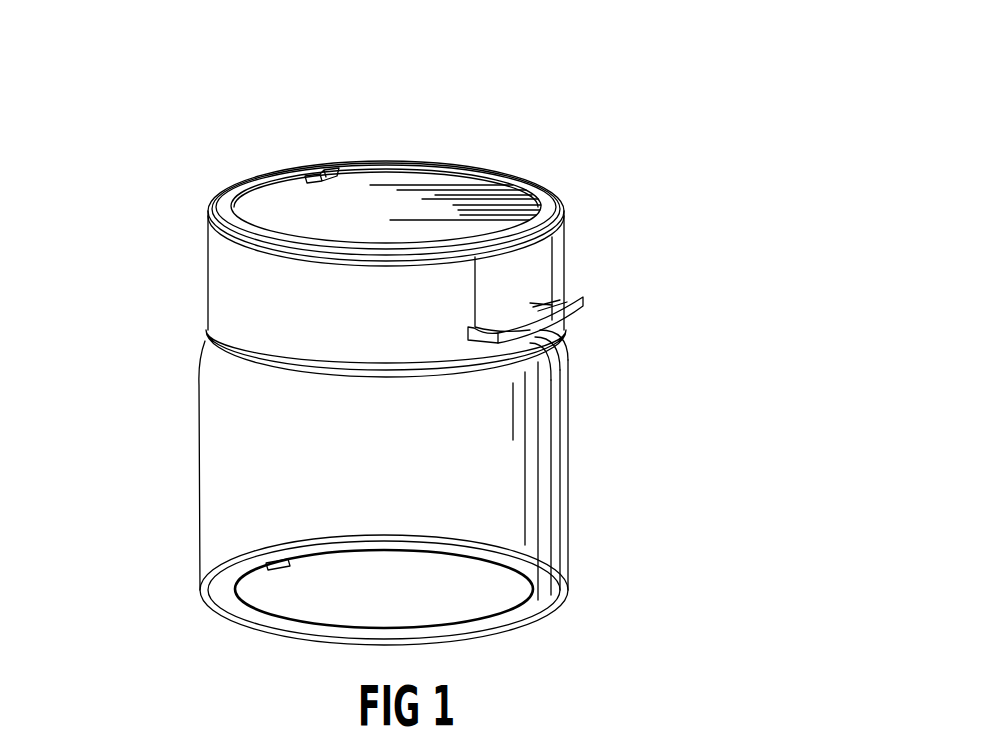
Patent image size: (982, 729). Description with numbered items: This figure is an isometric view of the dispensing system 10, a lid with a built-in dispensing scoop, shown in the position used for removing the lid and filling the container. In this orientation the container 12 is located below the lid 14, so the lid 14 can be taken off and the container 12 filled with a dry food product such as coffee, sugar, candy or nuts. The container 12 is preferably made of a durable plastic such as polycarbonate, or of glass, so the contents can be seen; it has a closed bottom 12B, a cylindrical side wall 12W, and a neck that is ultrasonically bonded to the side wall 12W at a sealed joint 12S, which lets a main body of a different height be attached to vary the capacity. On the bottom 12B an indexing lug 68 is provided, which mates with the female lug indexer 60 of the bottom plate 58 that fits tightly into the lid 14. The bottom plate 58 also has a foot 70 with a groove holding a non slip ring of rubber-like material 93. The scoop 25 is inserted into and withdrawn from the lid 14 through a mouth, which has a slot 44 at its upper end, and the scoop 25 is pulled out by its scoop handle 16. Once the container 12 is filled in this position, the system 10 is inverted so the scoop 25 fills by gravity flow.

The dispensing system 10 is at (165, 356).
The container 12 is at (413, 466).
The sealed joint 12S is at (568, 358).
The cylindrical side wall 12W is at (570, 516).
The bottom 12B is at (385, 590).
The lid 14 is at (215, 261).
The scoop handle 16 is at (570, 313).
The scoop 25 is at (523, 281).
The slot 44 is at (466, 336).
The bottom plate 58 is at (207, 209).
The female lug indexer 60 is at (339, 170).
The indexing lug 68 is at (273, 565).
The foot 70 is at (565, 205).
The non slip ring 93 is at (512, 176).